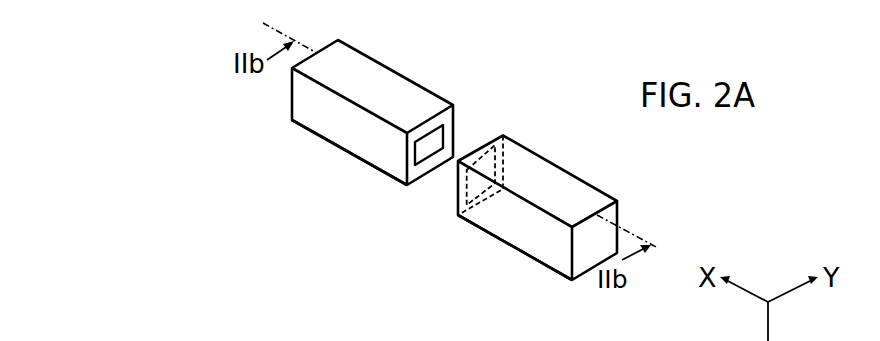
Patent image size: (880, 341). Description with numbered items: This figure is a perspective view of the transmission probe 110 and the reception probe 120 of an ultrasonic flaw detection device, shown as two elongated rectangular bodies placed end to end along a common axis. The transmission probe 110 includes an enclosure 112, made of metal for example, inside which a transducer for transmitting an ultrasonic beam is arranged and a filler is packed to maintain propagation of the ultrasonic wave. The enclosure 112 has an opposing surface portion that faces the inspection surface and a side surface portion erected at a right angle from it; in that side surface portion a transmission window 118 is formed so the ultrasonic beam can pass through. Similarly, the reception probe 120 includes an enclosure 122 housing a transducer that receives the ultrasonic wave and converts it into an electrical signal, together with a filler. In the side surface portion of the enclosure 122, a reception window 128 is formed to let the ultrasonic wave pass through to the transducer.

The transmission probe 110 is at (558, 166).
The enclosure 112 is at (515, 248).
The transmission window 118 is at (477, 152).
The reception probe 120 is at (396, 72).
The enclosure 122 is at (312, 129).
The reception window 128 is at (428, 146).